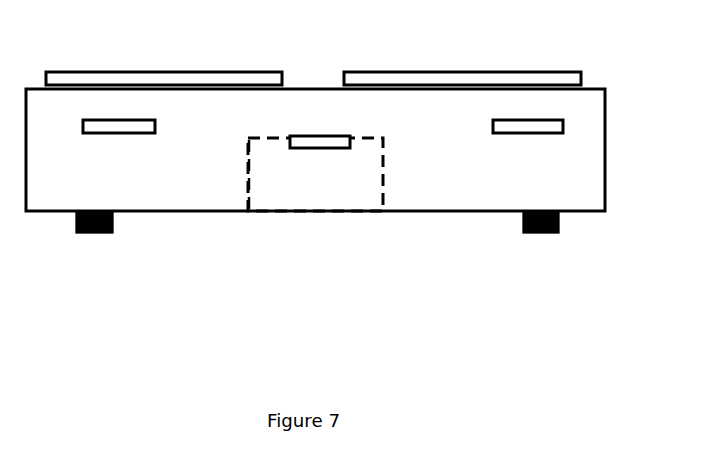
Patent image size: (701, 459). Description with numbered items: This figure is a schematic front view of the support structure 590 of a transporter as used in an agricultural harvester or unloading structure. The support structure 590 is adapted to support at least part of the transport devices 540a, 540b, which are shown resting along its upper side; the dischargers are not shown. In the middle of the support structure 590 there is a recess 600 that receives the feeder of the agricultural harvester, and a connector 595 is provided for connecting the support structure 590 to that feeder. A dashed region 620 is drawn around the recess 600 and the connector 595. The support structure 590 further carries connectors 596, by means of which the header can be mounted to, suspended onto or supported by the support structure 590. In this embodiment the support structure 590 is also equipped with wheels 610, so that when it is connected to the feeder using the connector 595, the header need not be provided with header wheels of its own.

The support structure 590 is at (583, 99).
The transport device 540a is at (219, 78).
The transport device 540b is at (452, 78).
The connector 596 is at (130, 126).
The connector 595 is at (323, 142).
The dashed region / compartment 620 is at (358, 212).
The recess 600 is at (320, 180).
The wheel 610 is at (530, 233).